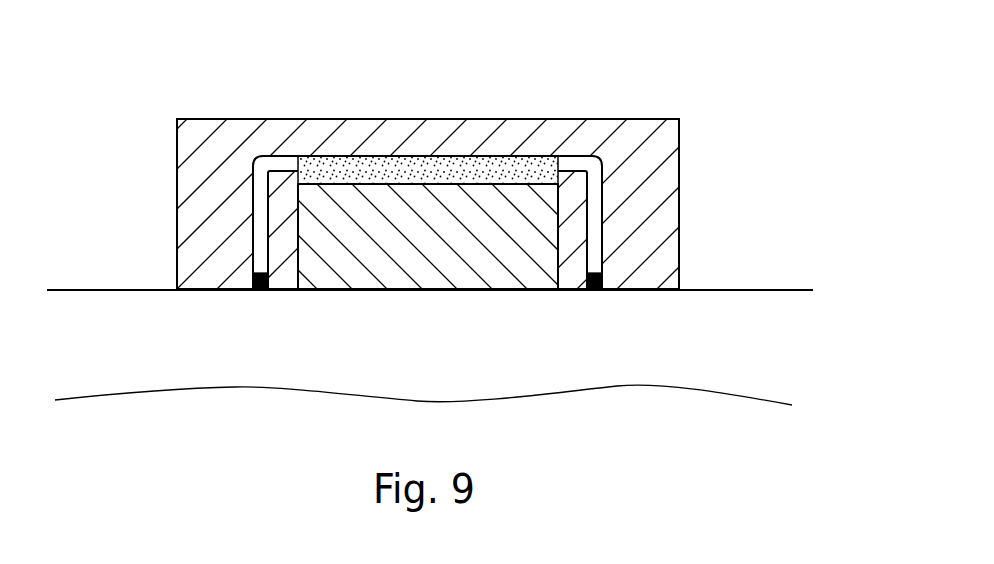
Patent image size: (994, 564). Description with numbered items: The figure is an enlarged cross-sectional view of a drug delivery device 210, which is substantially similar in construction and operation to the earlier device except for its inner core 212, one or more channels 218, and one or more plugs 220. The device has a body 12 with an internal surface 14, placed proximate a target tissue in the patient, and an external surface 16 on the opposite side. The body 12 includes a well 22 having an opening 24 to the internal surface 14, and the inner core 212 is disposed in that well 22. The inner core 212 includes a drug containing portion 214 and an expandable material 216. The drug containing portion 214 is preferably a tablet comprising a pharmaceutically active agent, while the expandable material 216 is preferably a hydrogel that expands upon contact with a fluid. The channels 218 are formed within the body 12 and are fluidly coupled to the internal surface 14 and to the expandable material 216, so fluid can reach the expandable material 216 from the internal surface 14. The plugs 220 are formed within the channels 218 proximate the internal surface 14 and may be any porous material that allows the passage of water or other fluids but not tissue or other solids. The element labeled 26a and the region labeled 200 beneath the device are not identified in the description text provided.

The body 12 is at (679, 187).
The internal surface 14 is at (638, 291).
The external surface 16 is at (655, 119).
The well 22 is at (424, 166).
The opening 24 is at (404, 305).
The contact region 26a is at (460, 291).
The substrate / circuit board 200 is at (148, 363).
The drug delivery device 210 is at (567, 52).
The inner core 212 is at (323, 148).
The drug containing portion 214 is at (456, 262).
The expandable material 216 is at (382, 156).
The channels 218 is at (255, 207).
The plugs 220 is at (260, 291).